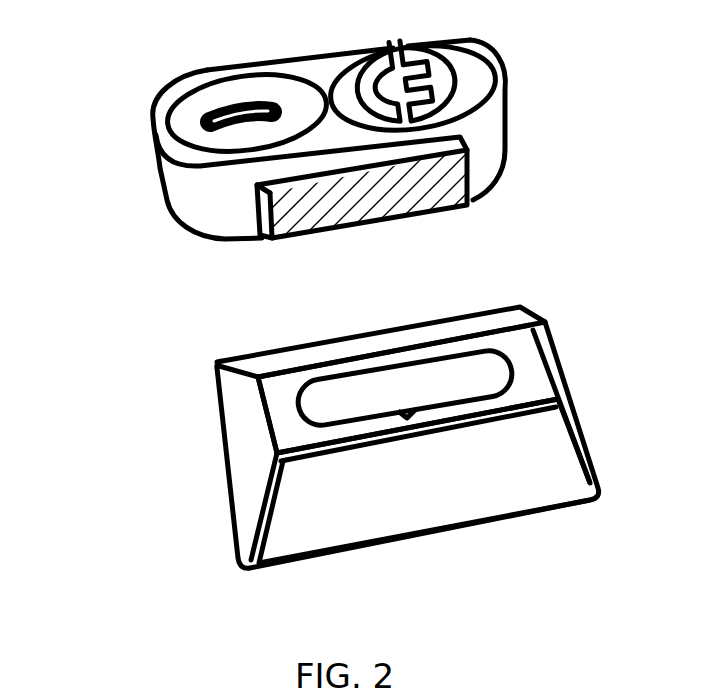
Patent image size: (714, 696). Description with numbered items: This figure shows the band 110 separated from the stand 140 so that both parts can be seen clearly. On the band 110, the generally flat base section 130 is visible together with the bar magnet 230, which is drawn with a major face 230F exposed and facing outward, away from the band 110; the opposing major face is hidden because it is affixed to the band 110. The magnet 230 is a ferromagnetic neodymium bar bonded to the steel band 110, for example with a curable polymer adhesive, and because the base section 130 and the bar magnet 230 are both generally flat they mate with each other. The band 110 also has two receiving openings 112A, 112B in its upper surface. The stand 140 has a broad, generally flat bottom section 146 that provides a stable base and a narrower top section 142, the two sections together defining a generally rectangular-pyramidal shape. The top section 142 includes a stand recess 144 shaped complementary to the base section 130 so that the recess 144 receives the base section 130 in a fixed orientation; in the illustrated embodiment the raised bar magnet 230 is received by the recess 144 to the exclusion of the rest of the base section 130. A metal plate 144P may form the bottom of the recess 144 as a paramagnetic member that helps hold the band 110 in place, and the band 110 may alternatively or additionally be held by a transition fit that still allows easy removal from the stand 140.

The band 110 is at (472, 40).
The first receiving portion 112A is at (200, 188).
The second receiving portion 112B is at (494, 166).
The base section 130 is at (434, 143).
The bar magnet 230 is at (371, 195).
The major face 230F is at (335, 195).
The stand 140 is at (208, 487).
The top section 142 is at (272, 415).
The stand recess 144 is at (476, 364).
The metal plate 144P is at (410, 399).
The bottom section 146 is at (505, 534).